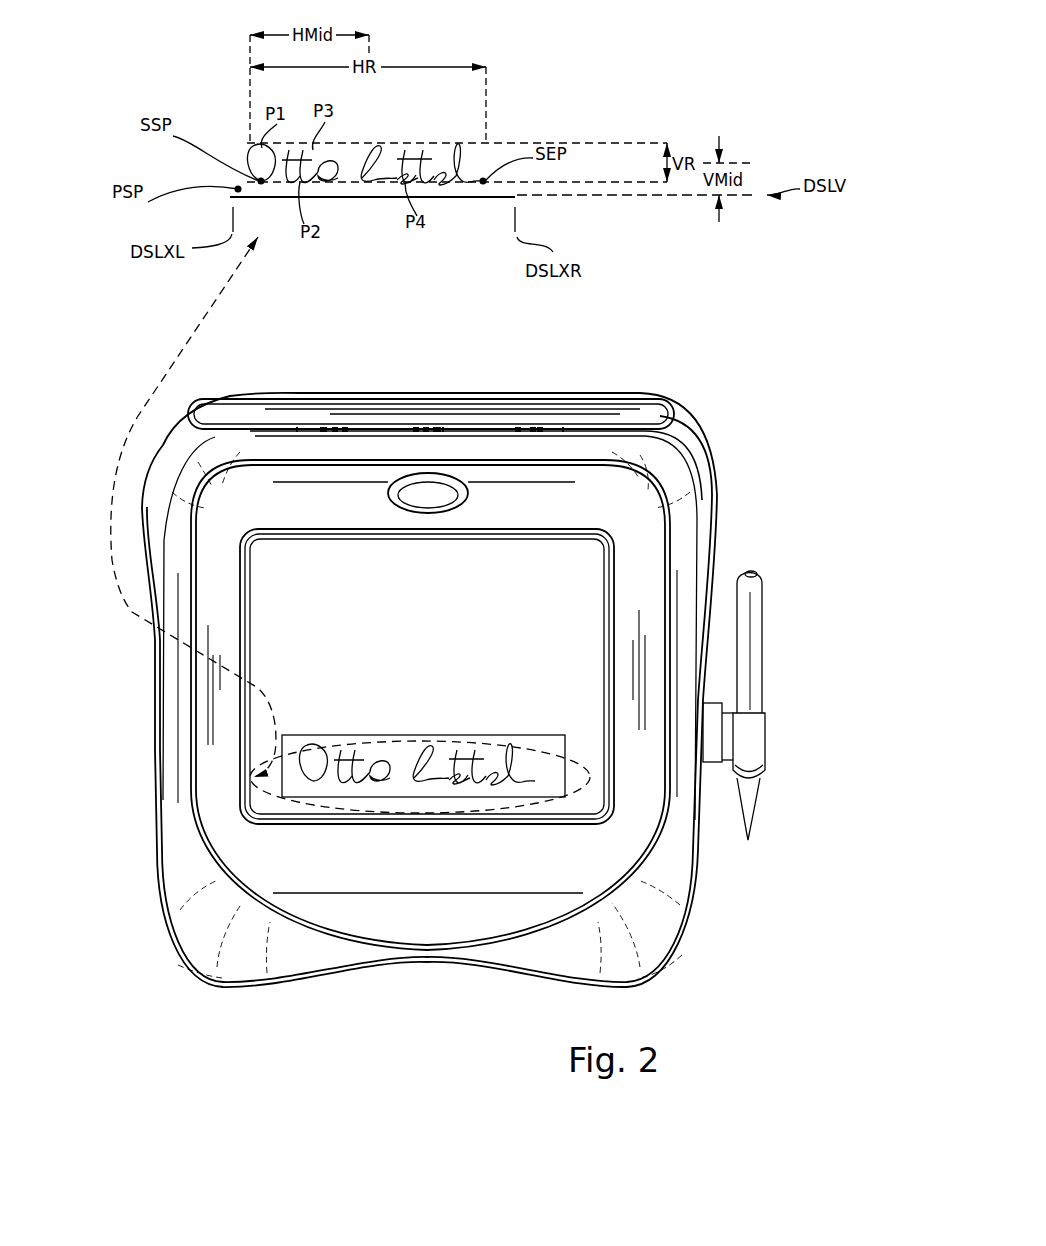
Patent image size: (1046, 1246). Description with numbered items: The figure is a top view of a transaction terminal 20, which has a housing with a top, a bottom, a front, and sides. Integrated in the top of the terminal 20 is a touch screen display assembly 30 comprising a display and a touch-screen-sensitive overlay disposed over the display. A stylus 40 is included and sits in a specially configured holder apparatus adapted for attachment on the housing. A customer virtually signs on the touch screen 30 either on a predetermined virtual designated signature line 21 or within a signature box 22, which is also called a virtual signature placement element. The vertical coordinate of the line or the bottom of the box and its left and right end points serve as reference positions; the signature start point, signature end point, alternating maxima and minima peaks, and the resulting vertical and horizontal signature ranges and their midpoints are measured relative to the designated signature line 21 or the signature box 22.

The transaction terminal 20 is at (100, 922).
The virtual designated signature line 21 is at (387, 199).
The signature box 22 is at (517, 735).
The touch screen display assembly 30 is at (540, 558).
The stylus 40 is at (765, 600).